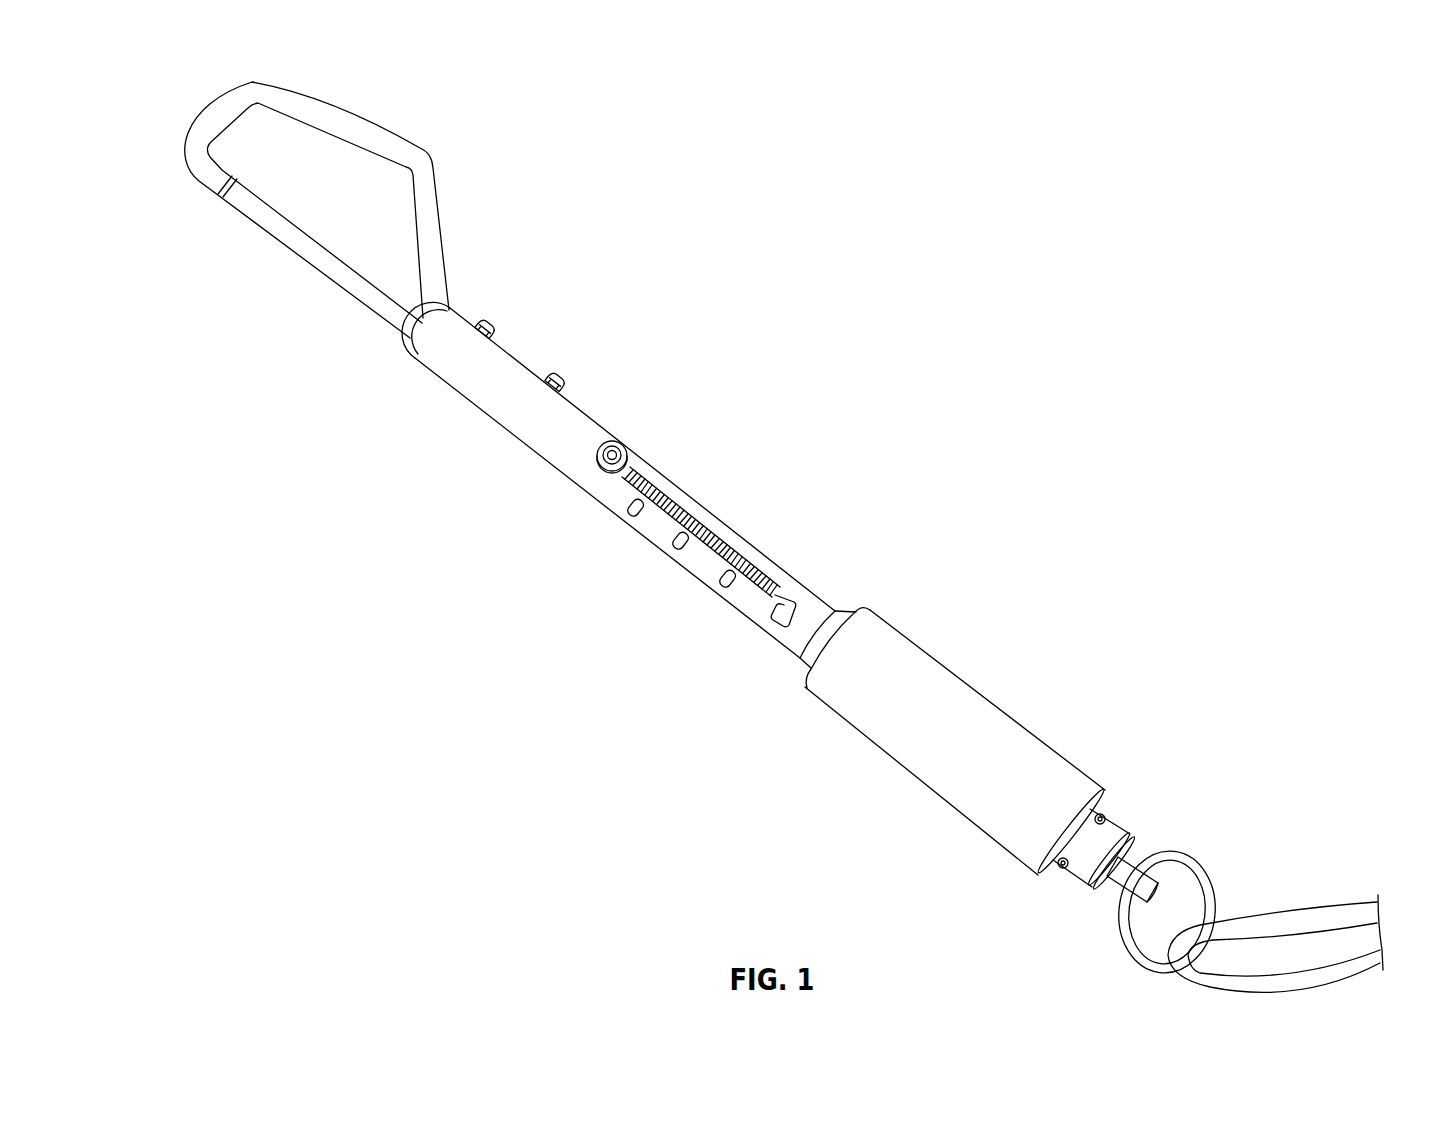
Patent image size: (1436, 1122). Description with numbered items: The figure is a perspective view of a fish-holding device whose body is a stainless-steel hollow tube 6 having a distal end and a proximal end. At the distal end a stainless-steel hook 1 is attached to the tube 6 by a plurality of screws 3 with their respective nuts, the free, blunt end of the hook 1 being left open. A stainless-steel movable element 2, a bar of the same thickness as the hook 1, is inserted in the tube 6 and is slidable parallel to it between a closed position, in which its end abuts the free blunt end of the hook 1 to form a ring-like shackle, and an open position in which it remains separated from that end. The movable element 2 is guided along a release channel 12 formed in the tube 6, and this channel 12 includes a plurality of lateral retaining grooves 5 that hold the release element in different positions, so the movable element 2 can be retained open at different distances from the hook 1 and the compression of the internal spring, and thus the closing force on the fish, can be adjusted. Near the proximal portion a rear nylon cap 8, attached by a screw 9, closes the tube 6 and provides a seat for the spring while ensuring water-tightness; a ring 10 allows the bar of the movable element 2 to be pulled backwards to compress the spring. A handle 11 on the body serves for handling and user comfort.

The hook 1 is at (784, 536).
The movable element 2 is at (355, 290).
The screws 3 is at (561, 377).
The lateral retaining grooves 5 is at (772, 623).
The hollow tube 6 is at (572, 425).
The rear nylon cap 8 is at (1130, 835).
The screw 9 is at (1058, 865).
The ring 10 is at (1198, 865).
The handle 11 is at (950, 712).
The release channel 12 is at (728, 547).